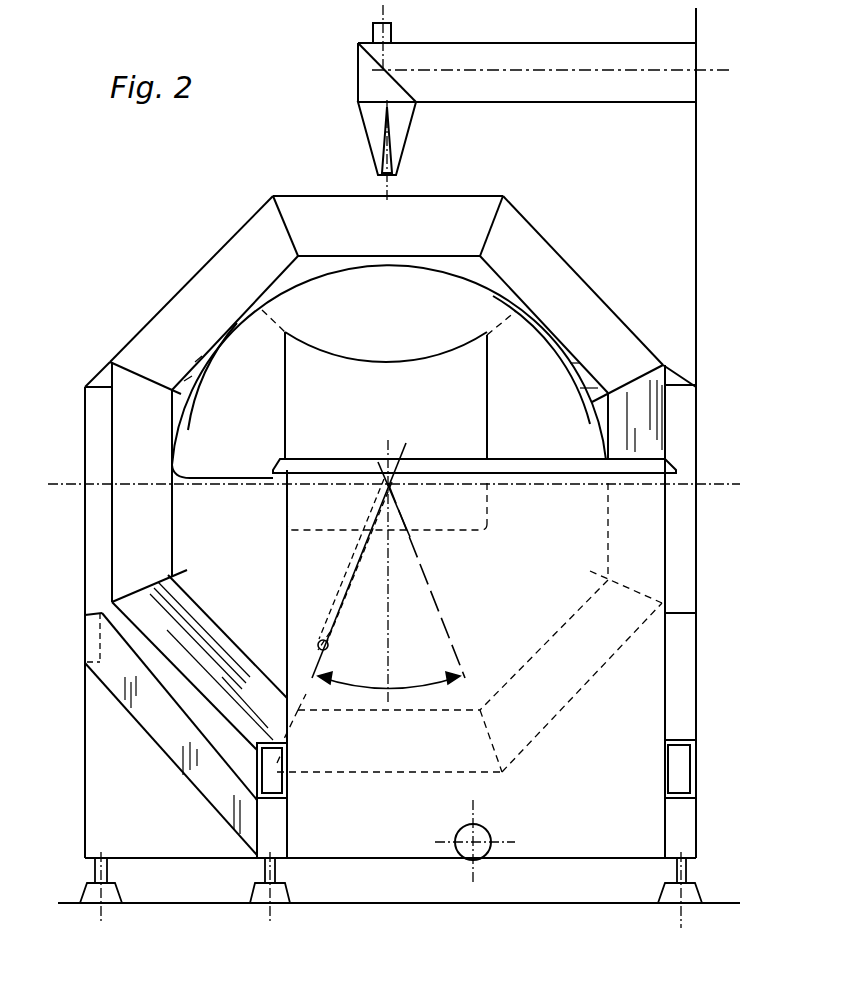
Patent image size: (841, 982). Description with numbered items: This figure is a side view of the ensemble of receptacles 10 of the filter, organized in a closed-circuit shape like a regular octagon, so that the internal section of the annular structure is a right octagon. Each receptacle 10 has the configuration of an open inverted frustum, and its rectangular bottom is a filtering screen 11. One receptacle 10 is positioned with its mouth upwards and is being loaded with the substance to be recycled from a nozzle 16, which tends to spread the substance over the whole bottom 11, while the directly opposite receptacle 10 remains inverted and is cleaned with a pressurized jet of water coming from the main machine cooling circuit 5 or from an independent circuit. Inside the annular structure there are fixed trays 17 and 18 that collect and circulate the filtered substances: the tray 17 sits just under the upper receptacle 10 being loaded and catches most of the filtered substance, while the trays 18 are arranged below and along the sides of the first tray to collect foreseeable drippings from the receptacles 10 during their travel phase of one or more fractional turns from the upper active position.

The main machine cooling circuit 5 is at (730, 145).
The receptacle 10 is at (562, 273).
The filtering screen 11 is at (438, 255).
The nozzle 16 is at (375, 117).
The tray 17 is at (316, 340).
The tray 18 is at (260, 478).